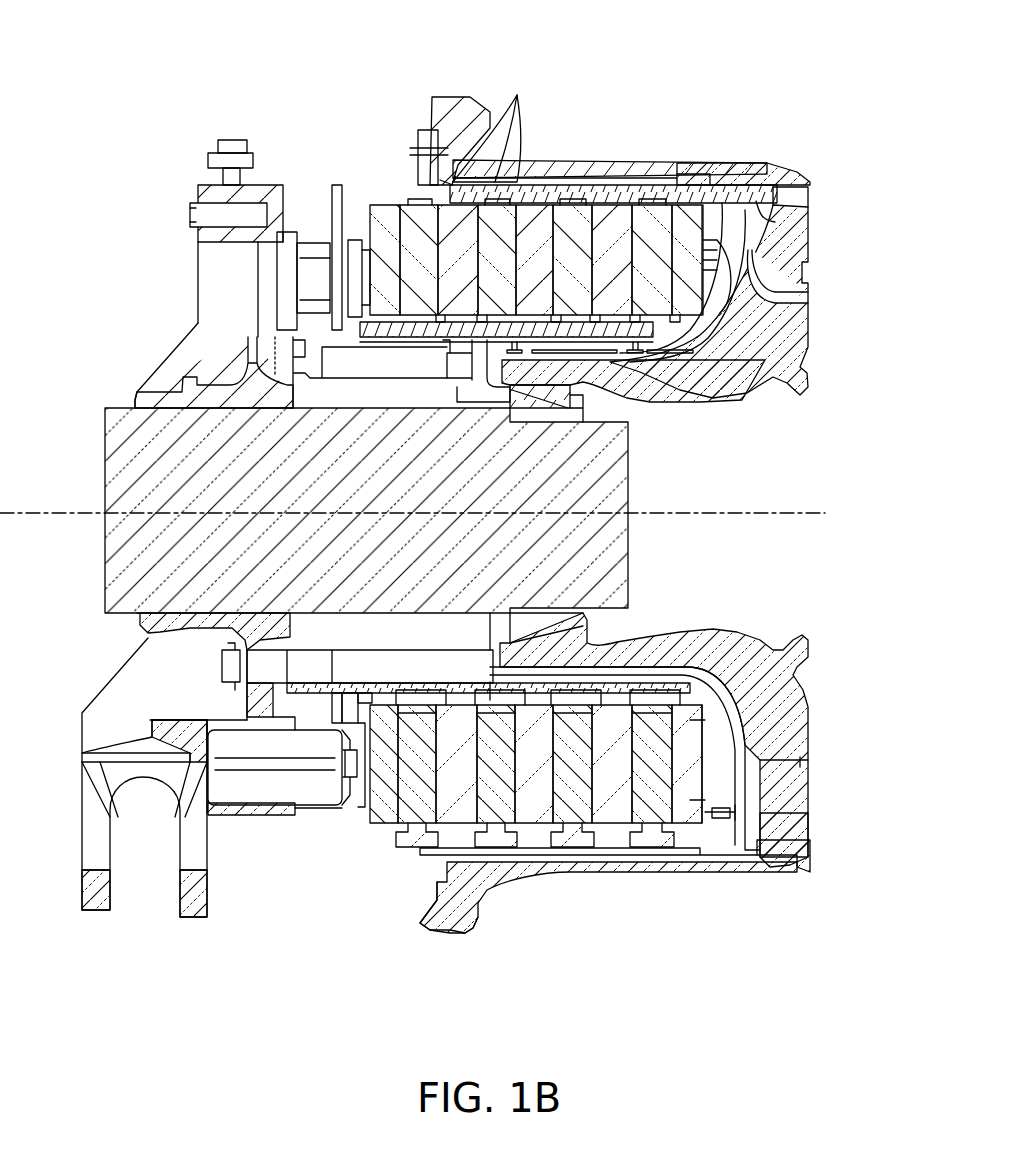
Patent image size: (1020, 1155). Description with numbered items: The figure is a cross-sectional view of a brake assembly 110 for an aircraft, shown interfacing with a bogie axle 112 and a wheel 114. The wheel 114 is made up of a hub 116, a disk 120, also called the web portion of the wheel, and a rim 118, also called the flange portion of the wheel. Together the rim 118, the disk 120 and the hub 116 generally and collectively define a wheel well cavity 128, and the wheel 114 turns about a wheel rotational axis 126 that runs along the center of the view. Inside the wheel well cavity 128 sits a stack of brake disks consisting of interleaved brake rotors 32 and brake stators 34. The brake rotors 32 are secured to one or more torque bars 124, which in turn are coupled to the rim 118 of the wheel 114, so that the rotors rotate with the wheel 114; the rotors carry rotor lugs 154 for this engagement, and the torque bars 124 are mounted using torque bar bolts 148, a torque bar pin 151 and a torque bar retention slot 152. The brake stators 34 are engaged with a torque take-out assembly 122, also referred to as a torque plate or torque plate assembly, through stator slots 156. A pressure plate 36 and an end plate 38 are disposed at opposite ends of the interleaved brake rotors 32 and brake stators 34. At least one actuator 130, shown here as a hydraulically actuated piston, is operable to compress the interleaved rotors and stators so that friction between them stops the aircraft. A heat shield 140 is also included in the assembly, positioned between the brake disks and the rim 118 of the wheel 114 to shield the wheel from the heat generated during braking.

The brake assembly 110 is at (840, 90).
The bogie axle 112 is at (85, 460).
The wheel 114 is at (655, 135).
The hub 116 is at (615, 375).
The rim 118 is at (545, 155).
The disk 120 is at (783, 333).
The torque take-out assembly 122 is at (418, 355).
The torque bar 124 is at (362, 185).
The wheel rotational axis 126 is at (700, 513).
The wheel well cavity 128 is at (749, 252).
The actuator 130 is at (265, 840).
The heat shield 140 is at (380, 862).
The torque bar bolt 148 is at (428, 165).
The torque bar pin 151 is at (732, 185).
The torque bar retention slot 152 is at (800, 200).
The rotor lug 154 is at (505, 165).
The stator slot 156 is at (457, 337).
The brake rotor 32 is at (432, 273).
The brake stator 34 is at (471, 273).
The pressure plate 36 is at (398, 273).
The end plate 38 is at (700, 273).